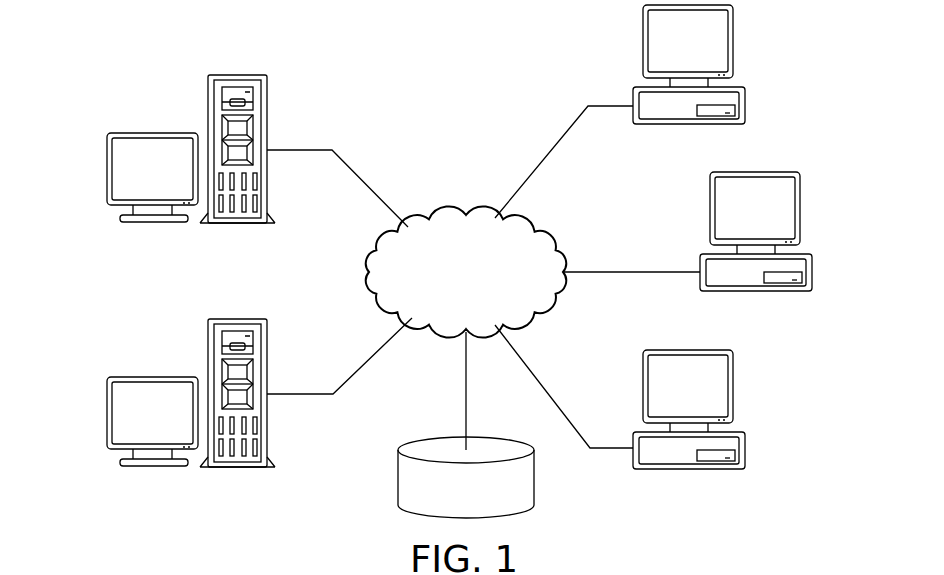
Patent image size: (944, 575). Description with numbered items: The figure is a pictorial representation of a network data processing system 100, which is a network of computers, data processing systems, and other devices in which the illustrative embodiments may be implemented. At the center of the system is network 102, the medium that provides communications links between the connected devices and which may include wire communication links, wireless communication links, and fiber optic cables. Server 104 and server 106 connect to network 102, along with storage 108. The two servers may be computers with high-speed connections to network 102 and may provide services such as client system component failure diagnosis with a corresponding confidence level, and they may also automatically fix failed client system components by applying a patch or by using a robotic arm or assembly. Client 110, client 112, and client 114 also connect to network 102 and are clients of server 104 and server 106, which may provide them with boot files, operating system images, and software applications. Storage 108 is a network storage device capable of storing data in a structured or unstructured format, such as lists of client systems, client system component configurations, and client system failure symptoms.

The network data processing system 100 is at (341, 66).
The network 102 is at (461, 213).
The server 104 is at (107, 172).
The server 106 is at (107, 411).
The storage 108 is at (398, 475).
The client 110 is at (746, 95).
The client 112 is at (812, 283).
The client 114 is at (746, 461).